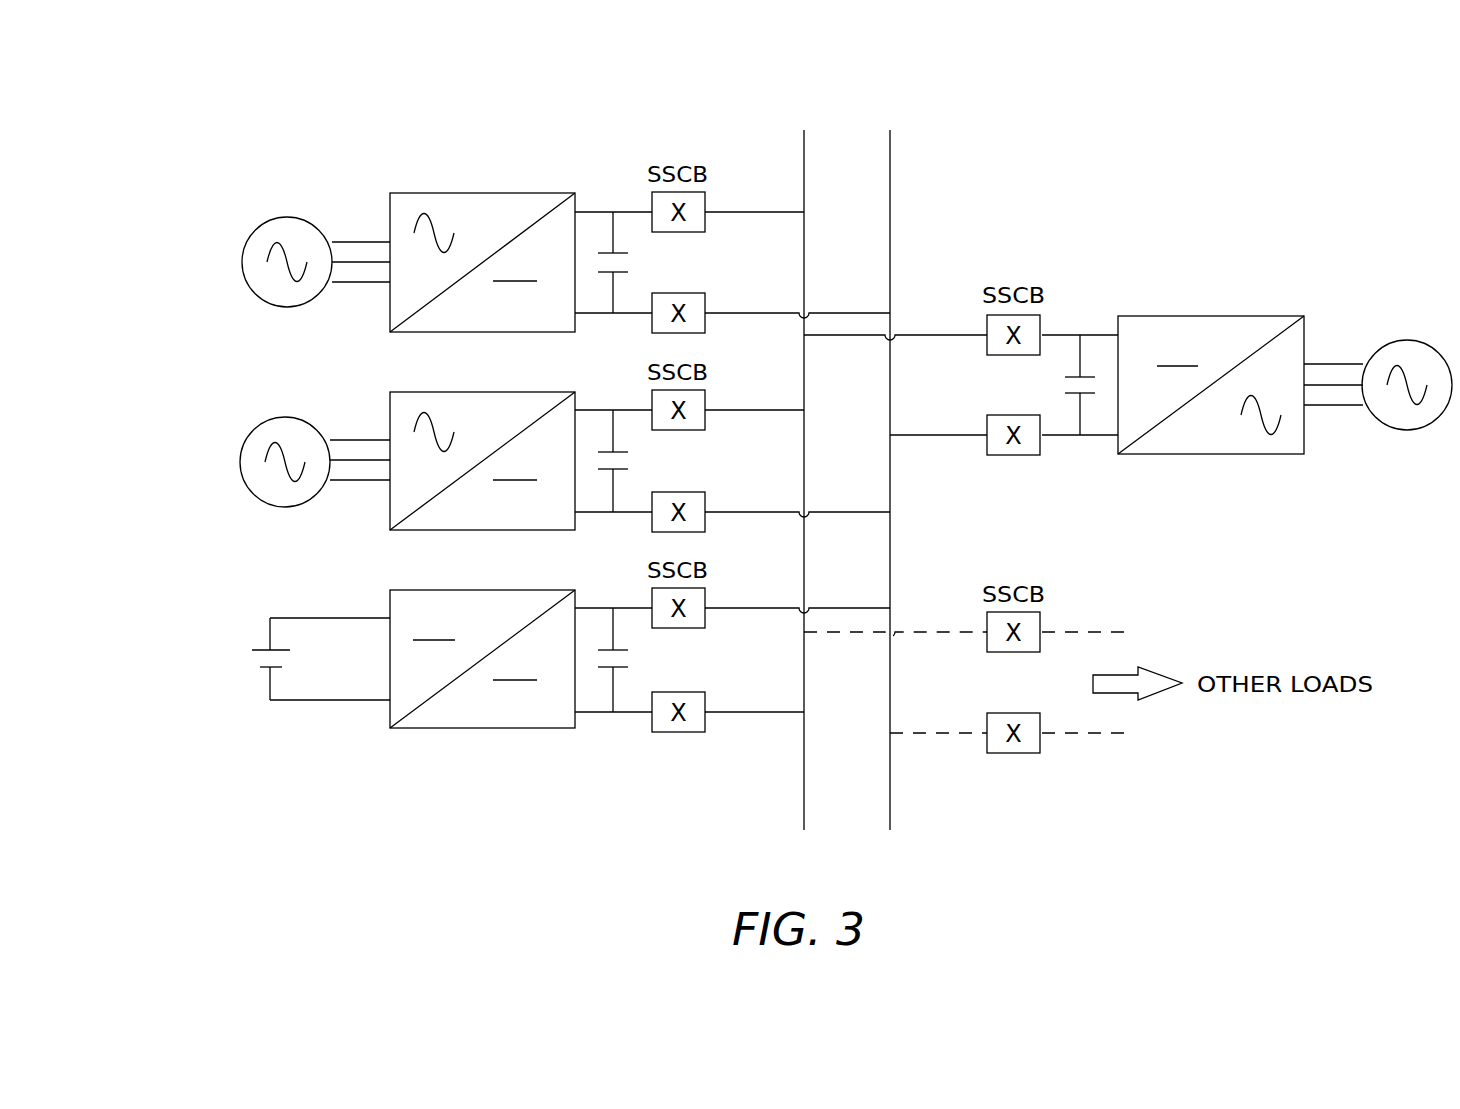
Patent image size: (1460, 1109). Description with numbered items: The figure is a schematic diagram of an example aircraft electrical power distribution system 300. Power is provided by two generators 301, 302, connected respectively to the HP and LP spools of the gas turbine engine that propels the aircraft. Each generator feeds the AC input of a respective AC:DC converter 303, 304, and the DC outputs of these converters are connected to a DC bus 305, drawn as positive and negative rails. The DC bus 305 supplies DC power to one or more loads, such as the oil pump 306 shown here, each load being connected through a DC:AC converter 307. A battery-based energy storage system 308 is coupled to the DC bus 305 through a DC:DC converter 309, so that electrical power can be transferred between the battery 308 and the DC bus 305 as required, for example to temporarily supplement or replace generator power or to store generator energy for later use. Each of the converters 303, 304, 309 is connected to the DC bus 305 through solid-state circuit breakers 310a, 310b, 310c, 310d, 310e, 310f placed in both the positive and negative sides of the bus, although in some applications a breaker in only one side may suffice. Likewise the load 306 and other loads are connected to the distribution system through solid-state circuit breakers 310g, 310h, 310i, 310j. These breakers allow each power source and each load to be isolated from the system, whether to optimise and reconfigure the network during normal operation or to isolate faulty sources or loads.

The aircraft electrical power distribution system 300 is at (356, 101).
The generator 301 is at (286, 217).
The generator 302 is at (285, 417).
The AC:DC converter 303 is at (430, 193).
The AC:DC converter 304 is at (423, 392).
The DC bus 305 is at (908, 124).
The oil pump 306 is at (1410, 340).
The DC:AC converter 307 is at (1268, 316).
The battery-based energy storage system 308 is at (262, 650).
The DC:DC converter 309 is at (423, 590).
The solid-state circuit breaker 310a is at (705, 198).
The solid-state circuit breaker 310b is at (705, 300).
The solid-state circuit breaker 310c is at (705, 398).
The solid-state circuit breaker 310d is at (705, 500).
The solid-state circuit breaker 310e is at (705, 596).
The solid-state circuit breaker 310f is at (705, 700).
The solid-state circuit breaker 310g is at (1042, 323).
The solid-state circuit breaker 310h is at (1042, 448).
The solid-state circuit breaker 310i is at (1042, 620).
The solid-state circuit breaker 310j is at (1042, 745).